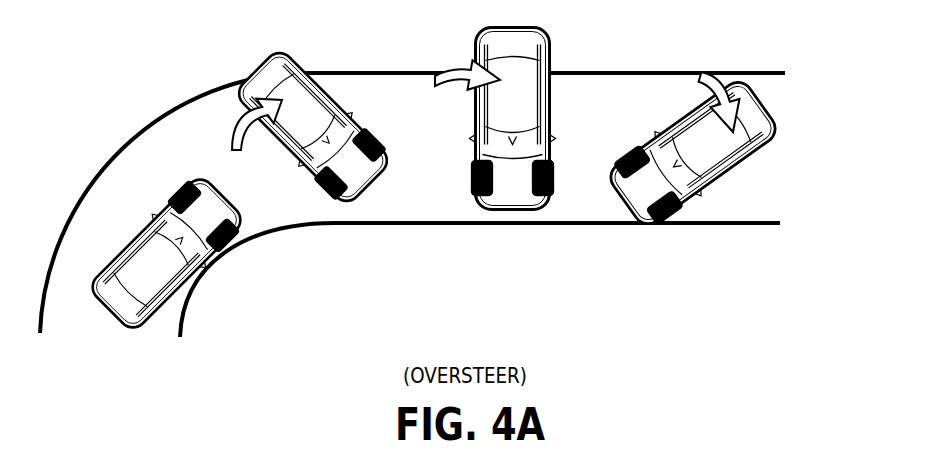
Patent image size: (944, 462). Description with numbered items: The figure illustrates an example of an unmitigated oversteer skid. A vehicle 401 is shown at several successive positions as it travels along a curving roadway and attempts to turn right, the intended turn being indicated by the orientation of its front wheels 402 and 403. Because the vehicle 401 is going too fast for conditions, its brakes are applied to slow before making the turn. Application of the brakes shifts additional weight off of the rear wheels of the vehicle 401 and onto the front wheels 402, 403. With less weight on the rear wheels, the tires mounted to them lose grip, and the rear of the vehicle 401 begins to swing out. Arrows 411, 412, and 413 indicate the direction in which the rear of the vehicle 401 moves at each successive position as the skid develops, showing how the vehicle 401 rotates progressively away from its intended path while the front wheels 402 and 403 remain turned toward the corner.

The vehicle 401 is at (172, 271).
The front wheel 402 is at (172, 180).
The front wheel 403 is at (231, 242).
The arrow 411 is at (250, 143).
The arrow 412 is at (466, 64).
The arrow 413 is at (727, 72).